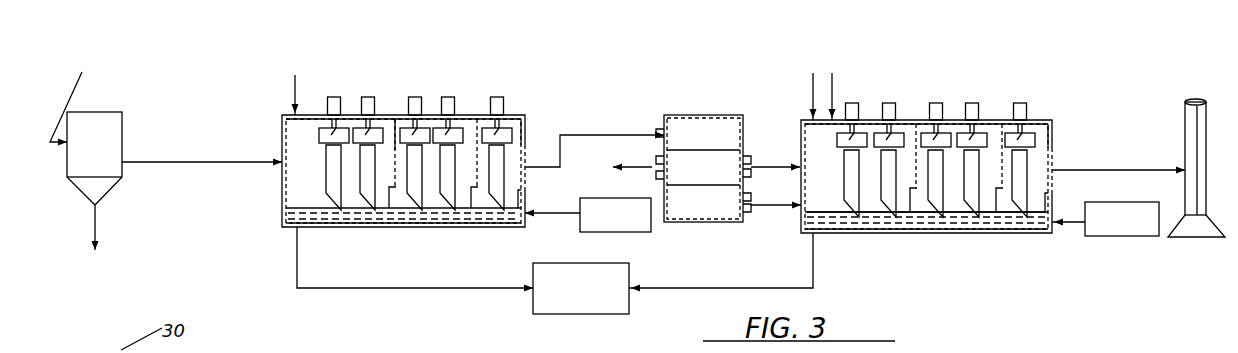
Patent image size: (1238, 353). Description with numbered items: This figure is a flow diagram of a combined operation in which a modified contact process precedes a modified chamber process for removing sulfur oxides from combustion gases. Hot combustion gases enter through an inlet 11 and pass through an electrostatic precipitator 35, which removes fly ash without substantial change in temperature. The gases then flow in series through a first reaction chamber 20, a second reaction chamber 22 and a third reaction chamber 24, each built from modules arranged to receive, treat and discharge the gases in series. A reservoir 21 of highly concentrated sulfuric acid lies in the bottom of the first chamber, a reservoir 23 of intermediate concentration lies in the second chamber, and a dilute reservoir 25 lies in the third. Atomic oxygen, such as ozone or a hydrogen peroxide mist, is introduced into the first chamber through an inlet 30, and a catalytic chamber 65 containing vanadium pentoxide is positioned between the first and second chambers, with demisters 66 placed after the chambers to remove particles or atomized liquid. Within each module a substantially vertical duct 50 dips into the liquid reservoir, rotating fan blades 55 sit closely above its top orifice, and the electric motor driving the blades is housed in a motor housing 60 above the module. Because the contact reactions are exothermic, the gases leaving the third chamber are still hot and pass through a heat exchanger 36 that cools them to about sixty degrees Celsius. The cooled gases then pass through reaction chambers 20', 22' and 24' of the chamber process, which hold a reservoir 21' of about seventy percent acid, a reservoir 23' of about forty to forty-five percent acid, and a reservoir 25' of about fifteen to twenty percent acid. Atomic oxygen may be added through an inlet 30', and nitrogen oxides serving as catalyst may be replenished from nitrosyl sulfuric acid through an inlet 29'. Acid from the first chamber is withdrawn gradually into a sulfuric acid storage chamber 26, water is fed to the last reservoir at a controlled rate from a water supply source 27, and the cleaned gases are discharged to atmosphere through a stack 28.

The inlet 11 is at (75, 106).
The first reaction chamber 20 is at (367, 171).
The first reaction chamber of the chamber process 20' is at (895, 161).
The reservoir of sulfuric acid 21 is at (367, 235).
The reservoir of sulfuric acid 21' is at (926, 248).
The second reaction chamber 22 is at (403, 86).
The second reaction chamber of the chamber process 22' is at (926, 92).
The reservoir of sulfuric acid 23 is at (667, 236).
The reservoir of sulfuric acid 23' is at (926, 241).
The third reaction chamber 24 is at (543, 107).
The third reaction chamber of the chamber process 24' is at (1063, 108).
The reservoir of sulfuric acid 25 is at (535, 222).
The reservoir of sulfuric acid 25' is at (1038, 233).
The sulfuric acid storage chamber 26 is at (597, 314).
The water supply source 27 is at (620, 232).
The stack 28 is at (1185, 140).
The inlet 29' is at (799, 72).
The inlet 30 is at (267, 80).
The inlet 30' is at (780, 86).
The electrostatic precipitator 35 is at (101, 149).
The heat exchanger 36 is at (713, 147).
The vertical duct 50 is at (325, 178).
The rotating fan blades 55 is at (616, 162).
The motor housing 60 is at (332, 97).
The catalytic chamber 65 is at (395, 117).
The demister 66 is at (478, 119).